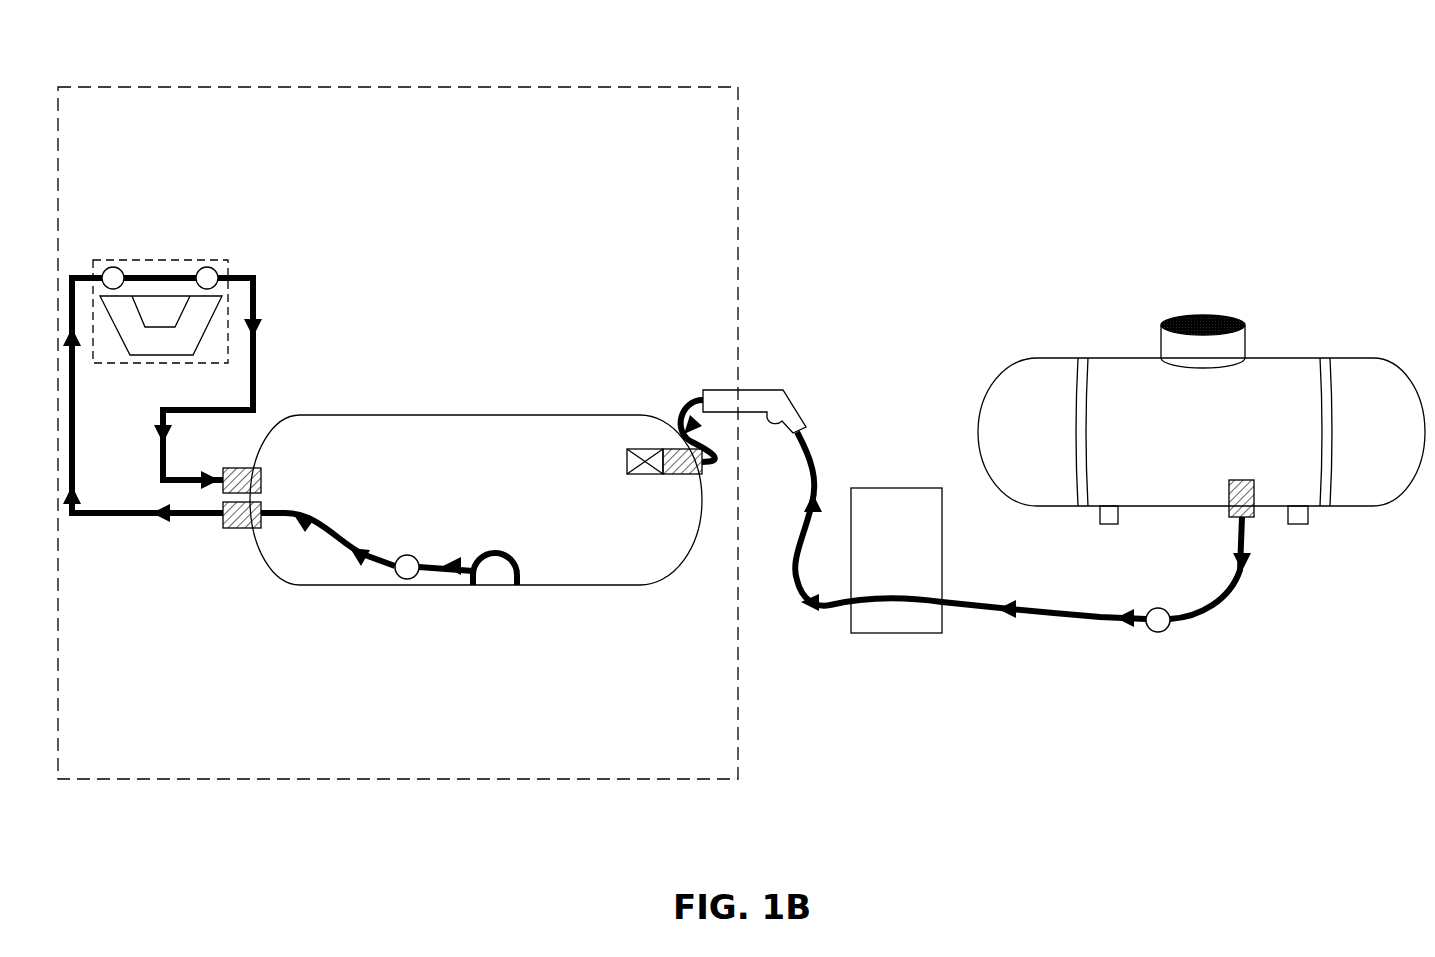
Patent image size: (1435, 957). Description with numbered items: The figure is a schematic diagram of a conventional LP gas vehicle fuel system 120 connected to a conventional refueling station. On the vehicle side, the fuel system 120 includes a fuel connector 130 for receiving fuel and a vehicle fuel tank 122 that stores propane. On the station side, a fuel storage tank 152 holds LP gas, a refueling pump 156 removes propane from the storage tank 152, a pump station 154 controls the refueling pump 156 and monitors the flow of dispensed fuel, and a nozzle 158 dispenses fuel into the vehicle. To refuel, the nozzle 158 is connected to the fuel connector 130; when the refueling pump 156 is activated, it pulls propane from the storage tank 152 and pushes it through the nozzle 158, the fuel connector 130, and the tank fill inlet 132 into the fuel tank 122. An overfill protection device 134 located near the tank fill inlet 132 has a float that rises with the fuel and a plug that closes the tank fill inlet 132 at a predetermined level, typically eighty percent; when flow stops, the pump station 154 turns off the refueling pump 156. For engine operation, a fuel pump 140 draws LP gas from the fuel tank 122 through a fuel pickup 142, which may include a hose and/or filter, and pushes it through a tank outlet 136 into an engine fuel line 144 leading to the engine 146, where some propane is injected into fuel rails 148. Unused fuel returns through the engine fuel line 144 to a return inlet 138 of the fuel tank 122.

The fuel system 120 is at (580, 87).
The vehicle fuel tank 122 is at (422, 415).
The fuel connector 130 is at (712, 390).
The tank fill inlet 132 is at (675, 449).
The overfill protection device (OPD) 134 is at (645, 476).
The tank outlet 136 is at (230, 530).
The return inlet 138 is at (232, 468).
The fuel pump 140 is at (407, 586).
The fuel pickup 142 is at (522, 588).
The engine fuel line 144 is at (108, 520).
The engine 146 is at (183, 260).
The fuel rails 148 is at (223, 290).
The fuel storage tank 152 is at (1280, 358).
The pump station 154 is at (897, 634).
The refueling pump 156 is at (1172, 622).
The nozzle 158 is at (785, 396).